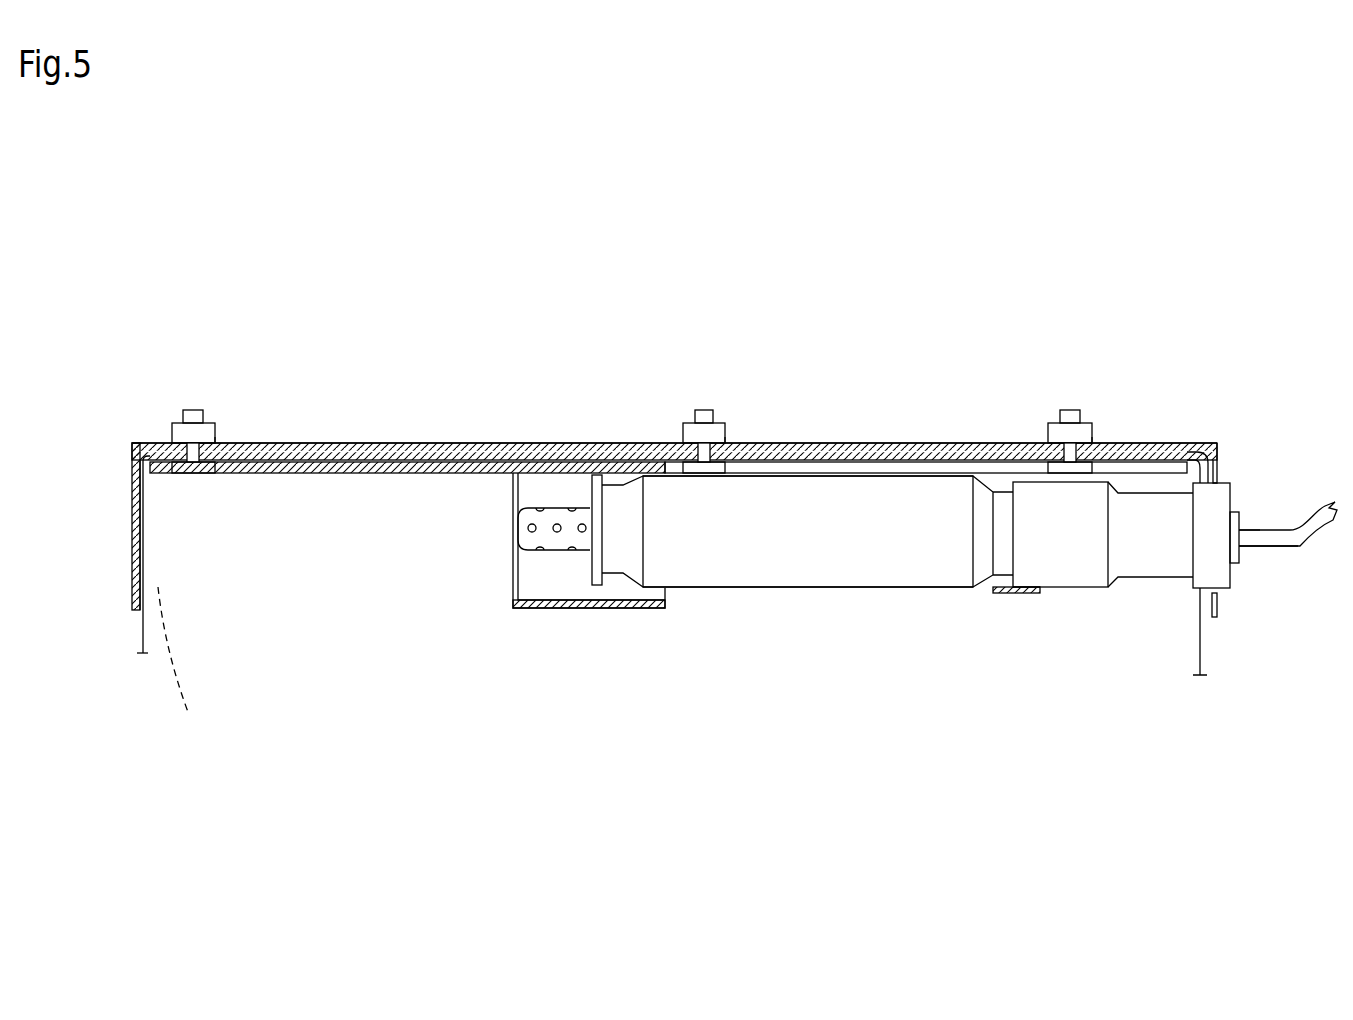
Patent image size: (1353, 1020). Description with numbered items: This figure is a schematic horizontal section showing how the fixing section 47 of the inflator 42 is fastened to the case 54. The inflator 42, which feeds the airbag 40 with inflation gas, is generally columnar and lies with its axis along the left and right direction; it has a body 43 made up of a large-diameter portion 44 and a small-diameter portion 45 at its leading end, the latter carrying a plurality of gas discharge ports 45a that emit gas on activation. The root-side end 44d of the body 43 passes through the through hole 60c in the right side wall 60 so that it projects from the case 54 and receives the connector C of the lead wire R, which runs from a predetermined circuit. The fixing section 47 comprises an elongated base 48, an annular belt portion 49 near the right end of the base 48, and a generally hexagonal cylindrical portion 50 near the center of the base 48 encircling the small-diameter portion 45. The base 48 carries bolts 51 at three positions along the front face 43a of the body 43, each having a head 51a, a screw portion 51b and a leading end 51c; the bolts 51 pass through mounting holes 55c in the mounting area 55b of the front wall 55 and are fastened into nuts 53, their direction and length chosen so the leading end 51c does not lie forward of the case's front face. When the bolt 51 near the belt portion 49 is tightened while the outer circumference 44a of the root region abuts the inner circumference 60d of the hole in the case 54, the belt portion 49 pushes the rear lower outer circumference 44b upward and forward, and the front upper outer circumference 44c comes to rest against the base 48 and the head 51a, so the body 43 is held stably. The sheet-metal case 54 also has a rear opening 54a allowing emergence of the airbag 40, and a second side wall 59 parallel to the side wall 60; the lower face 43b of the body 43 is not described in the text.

The airbag 40 is at (142, 630).
The inflator 42 is at (785, 770).
The inflator body 43 is at (787, 606).
The front face of the inflator body 43a is at (907, 476).
The cylinder lower surface 43b is at (852, 590).
The large-diameter portion 44 is at (925, 573).
The outer circumference of the front upper root region 44a is at (1219, 480).
The outer circumference of the rear lower portion 44b is at (1028, 593).
The outer circumference of the front upper leading end region 44c is at (652, 442).
The root-side end of the inflator body 44d is at (1181, 591).
The small-diameter portion 45 is at (520, 540).
The gas discharge ports 45a is at (540, 551).
The fixing section 47 is at (637, 618).
The base 48 is at (330, 474).
The belt portion 49 is at (1002, 594).
The cylindrical portion 50 is at (562, 610).
The bolts 51 is at (215, 413).
The head of the bolt 51a is at (186, 473).
The screw portion 51b is at (176, 423).
The leading end of the screw portion 51c is at (194, 410).
The nut 53 is at (215, 437).
The case 54 is at (113, 490).
The opening 54a is at (190, 667).
The front wall 55 is at (377, 441).
The mounting area 55b is at (437, 443).
The mounting holes 55c is at (185, 464).
The side wall 59 is at (130, 563).
The side wall 60 is at (1224, 483).
The through hole 60c is at (1218, 594).
The inner circumference of the insert hole 60d is at (1231, 497).
The connector C is at (1239, 550).
The lead wire R is at (1283, 547).